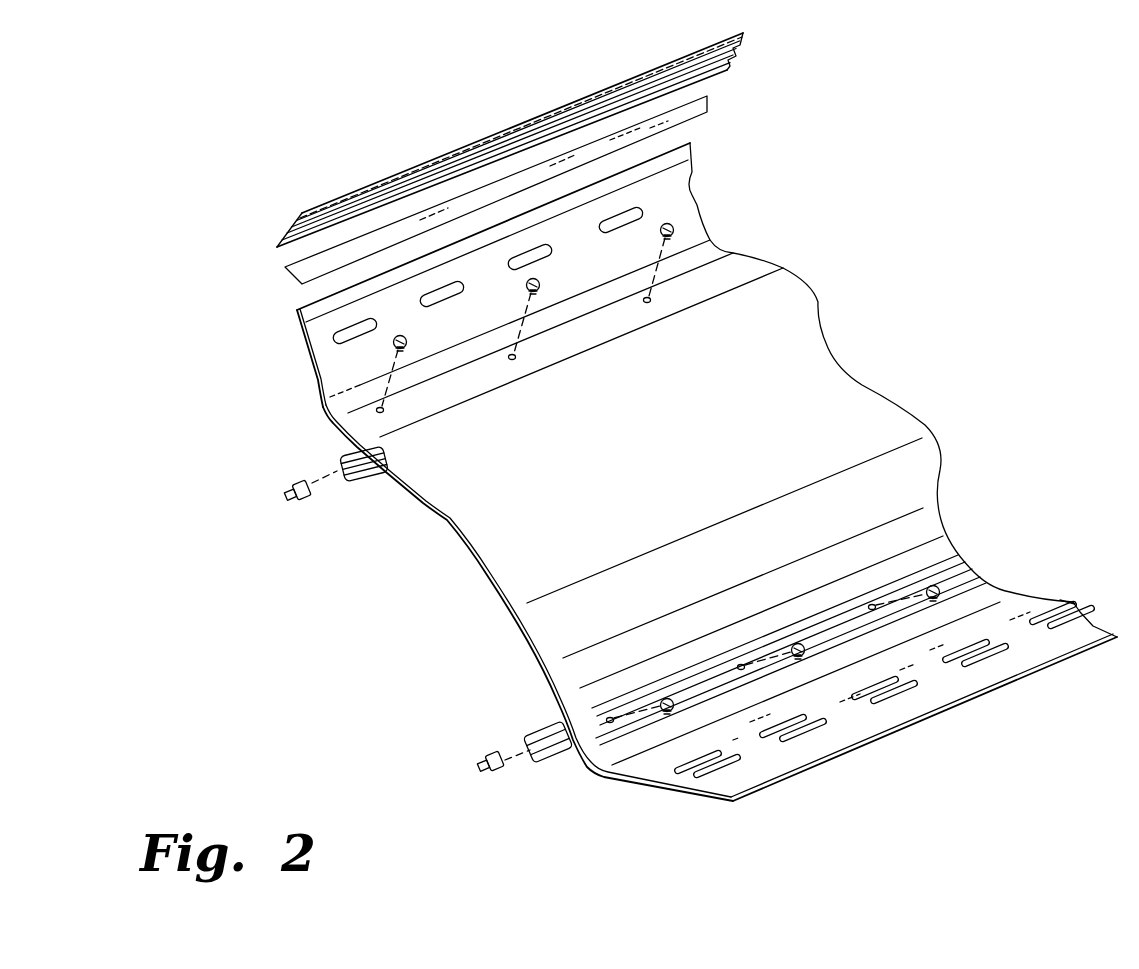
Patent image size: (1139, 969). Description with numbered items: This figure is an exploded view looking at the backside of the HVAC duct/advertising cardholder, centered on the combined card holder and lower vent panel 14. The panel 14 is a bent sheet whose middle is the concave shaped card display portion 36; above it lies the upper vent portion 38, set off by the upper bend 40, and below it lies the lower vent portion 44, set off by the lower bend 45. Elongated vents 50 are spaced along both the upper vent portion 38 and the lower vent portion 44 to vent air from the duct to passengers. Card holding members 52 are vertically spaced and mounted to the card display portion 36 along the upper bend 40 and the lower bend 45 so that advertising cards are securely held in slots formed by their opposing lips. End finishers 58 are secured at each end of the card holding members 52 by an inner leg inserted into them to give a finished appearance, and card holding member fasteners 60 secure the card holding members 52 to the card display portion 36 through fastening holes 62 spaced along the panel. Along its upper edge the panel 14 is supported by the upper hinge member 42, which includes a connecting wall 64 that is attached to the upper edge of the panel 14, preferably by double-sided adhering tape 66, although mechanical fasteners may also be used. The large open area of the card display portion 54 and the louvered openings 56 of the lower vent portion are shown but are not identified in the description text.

The combined card holder and lower vent panel 14 is at (668, 497).
The concave shaped card display portion 36 is at (448, 500).
The upper vent portion 38 is at (316, 362).
The upper bend 40 is at (340, 405).
The upper hinge member 42 is at (595, 92).
The lower vent portion 44 is at (712, 773).
The lower bend 45 is at (598, 762).
The elongated vents 50 is at (633, 230).
The card holding members 52 is at (340, 456).
The main panel 54 is at (670, 448).
The louvered slots 56 is at (740, 778).
The end finishers 58 is at (287, 496).
The card holding member fasteners 60 is at (527, 288).
The fastening holes 62 is at (384, 411).
The connecting wall 64 is at (740, 44).
The double-sided adhering tape 66 is at (287, 267).